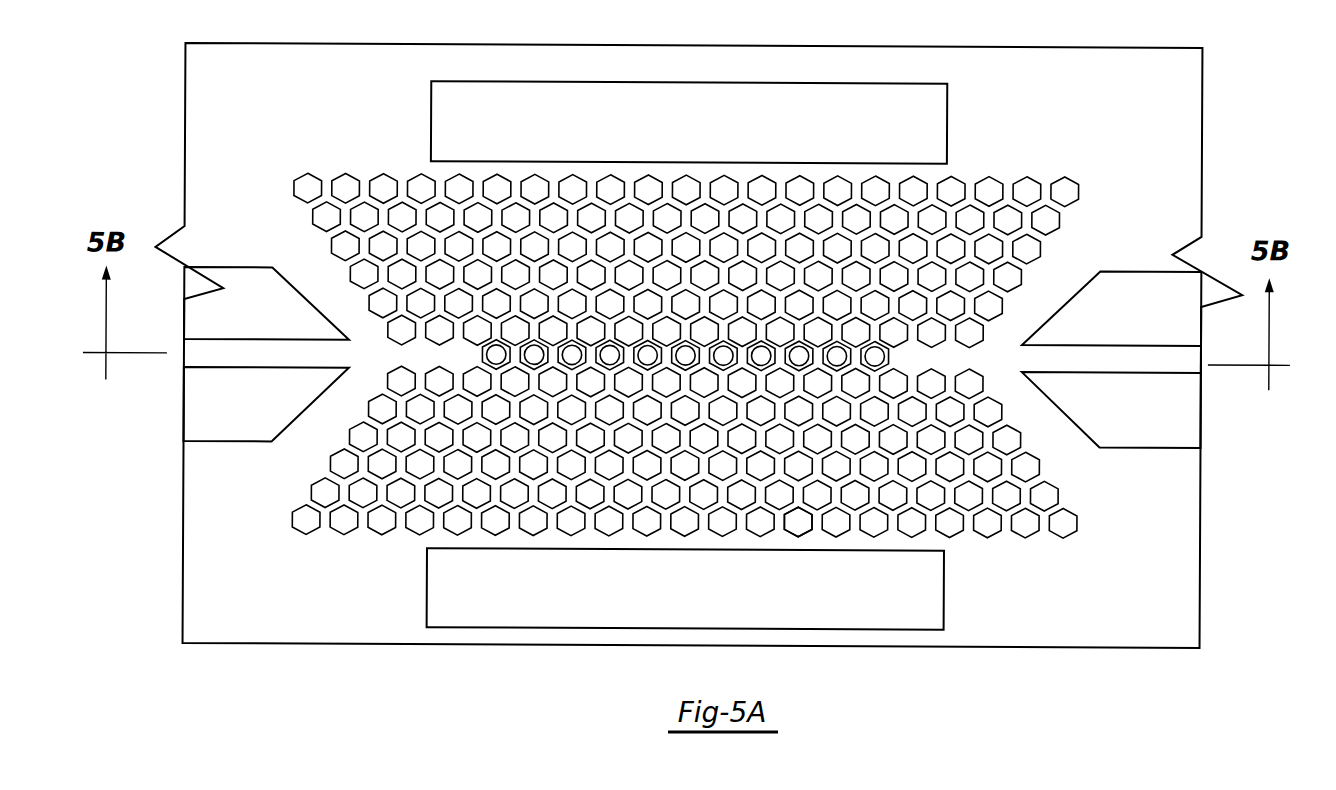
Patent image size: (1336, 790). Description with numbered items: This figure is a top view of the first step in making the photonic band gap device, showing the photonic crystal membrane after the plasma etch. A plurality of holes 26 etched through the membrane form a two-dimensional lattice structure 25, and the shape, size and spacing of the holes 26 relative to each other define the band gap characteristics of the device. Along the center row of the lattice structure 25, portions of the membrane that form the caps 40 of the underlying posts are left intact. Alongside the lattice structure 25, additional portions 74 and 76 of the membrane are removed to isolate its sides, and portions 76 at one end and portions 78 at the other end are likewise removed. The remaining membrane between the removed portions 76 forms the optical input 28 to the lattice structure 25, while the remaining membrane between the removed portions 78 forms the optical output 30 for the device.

The two-dimensional lattice structure 25 is at (678, 393).
The holes 26 is at (803, 530).
The optical input 28 is at (283, 357).
The optical output 30 is at (1087, 358).
The caps 40 is at (494, 352).
The additional portion of the membrane 74 is at (678, 127).
The removed portion of the membrane 76 is at (672, 600).
The removed portion of the membrane 78 is at (1160, 392).